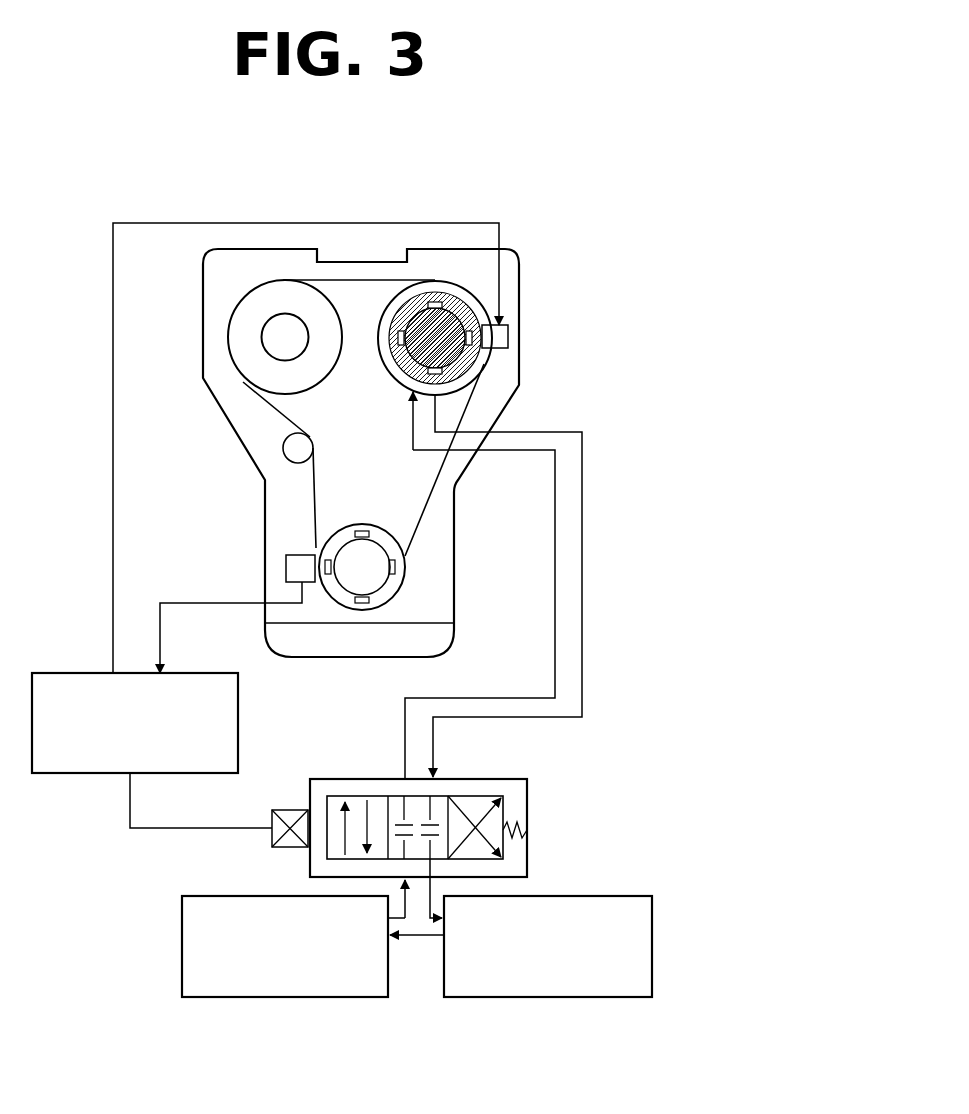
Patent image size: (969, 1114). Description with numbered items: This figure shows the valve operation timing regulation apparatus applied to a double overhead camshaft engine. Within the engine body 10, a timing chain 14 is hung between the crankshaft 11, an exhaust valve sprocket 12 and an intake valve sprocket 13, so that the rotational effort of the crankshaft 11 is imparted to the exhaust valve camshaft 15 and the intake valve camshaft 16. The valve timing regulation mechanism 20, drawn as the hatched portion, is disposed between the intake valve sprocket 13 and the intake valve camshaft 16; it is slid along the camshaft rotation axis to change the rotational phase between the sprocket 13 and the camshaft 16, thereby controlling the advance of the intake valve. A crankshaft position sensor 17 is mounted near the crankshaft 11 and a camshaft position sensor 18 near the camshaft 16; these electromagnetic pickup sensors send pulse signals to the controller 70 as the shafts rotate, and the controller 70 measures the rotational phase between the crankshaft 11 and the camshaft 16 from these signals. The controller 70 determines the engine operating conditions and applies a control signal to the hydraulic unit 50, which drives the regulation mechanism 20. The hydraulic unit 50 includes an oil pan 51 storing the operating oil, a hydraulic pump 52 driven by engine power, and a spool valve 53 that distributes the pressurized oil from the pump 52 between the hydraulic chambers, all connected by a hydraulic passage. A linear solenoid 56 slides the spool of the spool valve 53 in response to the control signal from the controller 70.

The engine body 10 is at (545, 262).
The crankshaft 11 is at (388, 587).
The exhaust valve sprocket 12 is at (277, 288).
The intake valve sprocket 13 is at (457, 293).
The timing chain 14 is at (433, 497).
The exhaust valve camshaft 15 is at (272, 333).
The intake valve camshaft 16 is at (420, 318).
The crankshaft position sensor 17 is at (287, 566).
The camshaft position sensor 18 is at (508, 337).
The valve timing regulation mechanism 20 is at (487, 367).
The hydraulic unit 50 is at (566, 803).
The oil pan 51 is at (577, 997).
The hydraulic pump 52 is at (295, 997).
The spool valve 53 is at (483, 779).
The linear solenoid 56 is at (283, 810).
The controller 70 is at (72, 773).